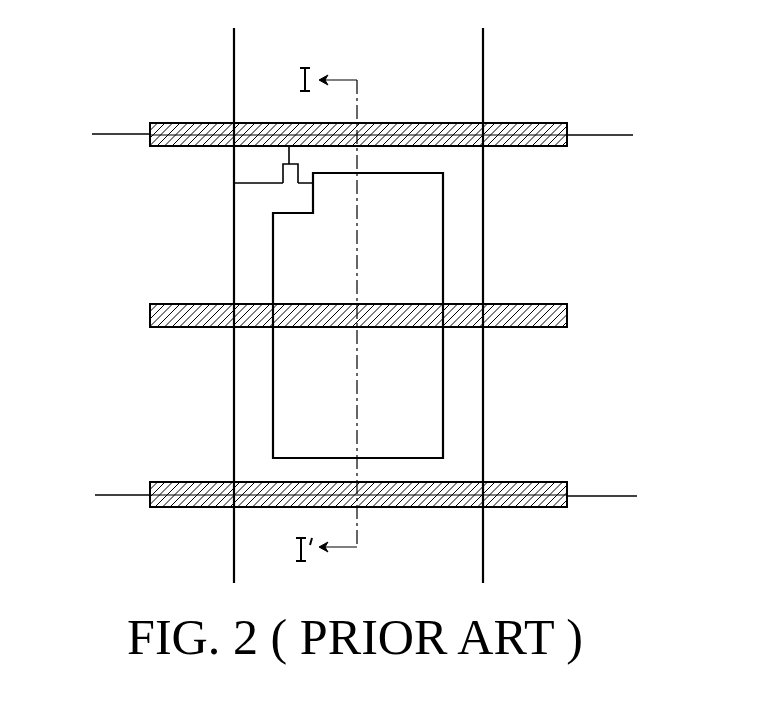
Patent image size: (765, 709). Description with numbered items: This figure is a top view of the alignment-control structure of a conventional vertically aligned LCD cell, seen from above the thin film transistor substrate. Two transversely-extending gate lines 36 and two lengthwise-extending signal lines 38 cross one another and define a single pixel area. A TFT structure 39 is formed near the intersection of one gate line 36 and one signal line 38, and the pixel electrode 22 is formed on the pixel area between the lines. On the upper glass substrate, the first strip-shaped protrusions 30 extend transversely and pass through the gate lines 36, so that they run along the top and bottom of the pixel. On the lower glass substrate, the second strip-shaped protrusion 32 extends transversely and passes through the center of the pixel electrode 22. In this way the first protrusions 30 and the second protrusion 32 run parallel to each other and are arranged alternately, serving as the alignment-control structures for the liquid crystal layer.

The pixel electrode 22 is at (430, 231).
The first strip-shaped protrusion 30 is at (547, 122).
The second strip-shaped protrusion 32 is at (547, 303).
The gate line 36 is at (120, 133).
The signal line 38 is at (234, 47).
The TFT structure 39 is at (282, 189).